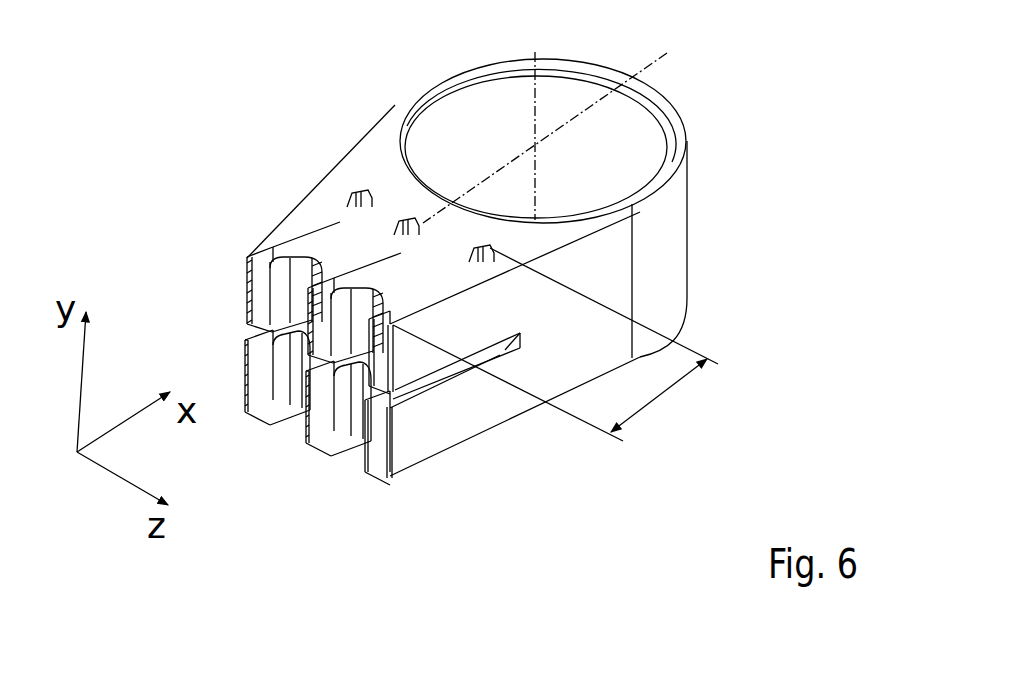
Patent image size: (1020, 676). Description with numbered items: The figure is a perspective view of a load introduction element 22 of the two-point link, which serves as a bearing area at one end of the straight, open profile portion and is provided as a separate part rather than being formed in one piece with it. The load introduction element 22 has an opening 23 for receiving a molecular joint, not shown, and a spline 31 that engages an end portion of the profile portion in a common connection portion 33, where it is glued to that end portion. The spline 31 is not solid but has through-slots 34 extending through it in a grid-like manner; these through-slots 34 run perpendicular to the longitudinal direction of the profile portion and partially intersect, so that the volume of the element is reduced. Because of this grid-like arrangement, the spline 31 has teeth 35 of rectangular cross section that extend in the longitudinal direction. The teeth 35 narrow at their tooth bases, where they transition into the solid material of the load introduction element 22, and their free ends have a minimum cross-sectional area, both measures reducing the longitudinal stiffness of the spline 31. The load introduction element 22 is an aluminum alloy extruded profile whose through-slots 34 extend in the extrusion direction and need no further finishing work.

The load introduction element 22 is at (703, 118).
The opening 23 is at (585, 183).
The spline 31 is at (345, 456).
The connection portion 33 is at (660, 394).
The through-slots 34 is at (457, 253).
The teeth 35 is at (343, 250).